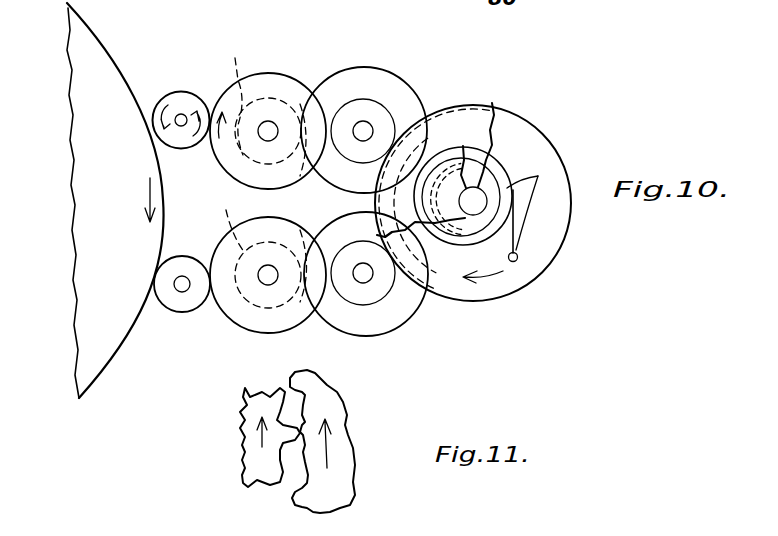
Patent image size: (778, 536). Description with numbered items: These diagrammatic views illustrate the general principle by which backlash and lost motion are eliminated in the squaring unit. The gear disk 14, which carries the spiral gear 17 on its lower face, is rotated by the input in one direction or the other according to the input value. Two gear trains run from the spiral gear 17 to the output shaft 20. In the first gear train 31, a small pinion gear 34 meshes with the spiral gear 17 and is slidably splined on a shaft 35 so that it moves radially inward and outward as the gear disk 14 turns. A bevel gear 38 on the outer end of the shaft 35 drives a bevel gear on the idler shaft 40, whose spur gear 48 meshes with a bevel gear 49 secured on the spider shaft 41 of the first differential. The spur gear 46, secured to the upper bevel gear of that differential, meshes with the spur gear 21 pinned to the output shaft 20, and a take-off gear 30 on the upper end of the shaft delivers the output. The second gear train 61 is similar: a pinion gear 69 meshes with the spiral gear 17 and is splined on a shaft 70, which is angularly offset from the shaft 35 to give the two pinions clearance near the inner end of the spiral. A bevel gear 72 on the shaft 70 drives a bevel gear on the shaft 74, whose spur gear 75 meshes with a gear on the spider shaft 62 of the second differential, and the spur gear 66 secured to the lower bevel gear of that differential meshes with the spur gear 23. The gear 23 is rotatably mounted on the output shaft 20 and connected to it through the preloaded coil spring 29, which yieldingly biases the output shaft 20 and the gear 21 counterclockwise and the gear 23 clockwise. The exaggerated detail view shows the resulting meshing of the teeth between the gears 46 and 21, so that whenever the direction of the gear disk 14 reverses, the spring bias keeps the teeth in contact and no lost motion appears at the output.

In FIG. 10, the gear disk 14 is at (72, 183).
In FIG. 10, the spiral gear 17 is at (111, 45).
In FIG. 10, the output shaft 20 is at (463, 148).
In FIG. 10, the spur gear 21 is at (468, 104).
In FIG. 11, the spur gear 21 is at (346, 428).
In FIG. 10, the spur gear 23 is at (541, 130).
In FIG. 10, the coil spring 29 is at (532, 210).
In FIG. 10, the take-off gear 30 is at (416, 197).
In FIG. 10, the gear train 31 is at (316, 78).
In FIG. 10, the pinion gear 34 is at (175, 91).
In FIG. 10, the shaft 35 is at (182, 127).
In FIG. 10, the bevel gear 38 is at (262, 76).
In FIG. 10, the idler shaft 40 is at (272, 124).
In FIG. 10, the spider shaft 41 is at (368, 126).
In FIG. 10, the spur gear 46 is at (387, 119).
In FIG. 11, the spur gear 46 is at (250, 436).
In FIG. 10, the spur gear 48 is at (264, 107).
In FIG. 10, the bevel gear 49 is at (350, 70).
In FIG. 10, the gear train 61 is at (255, 351).
In FIG. 10, the spider shaft 62 is at (369, 279).
In FIG. 10, the spur gear 66 is at (380, 306).
In FIG. 10, the pinion gear 69 is at (168, 310).
In FIG. 10, the shaft 70 is at (178, 284).
In FIG. 10, the bevel gear 72 is at (291, 330).
In FIG. 10, the shaft 74 is at (268, 283).
In FIG. 10, the spur gear 75 is at (258, 251).